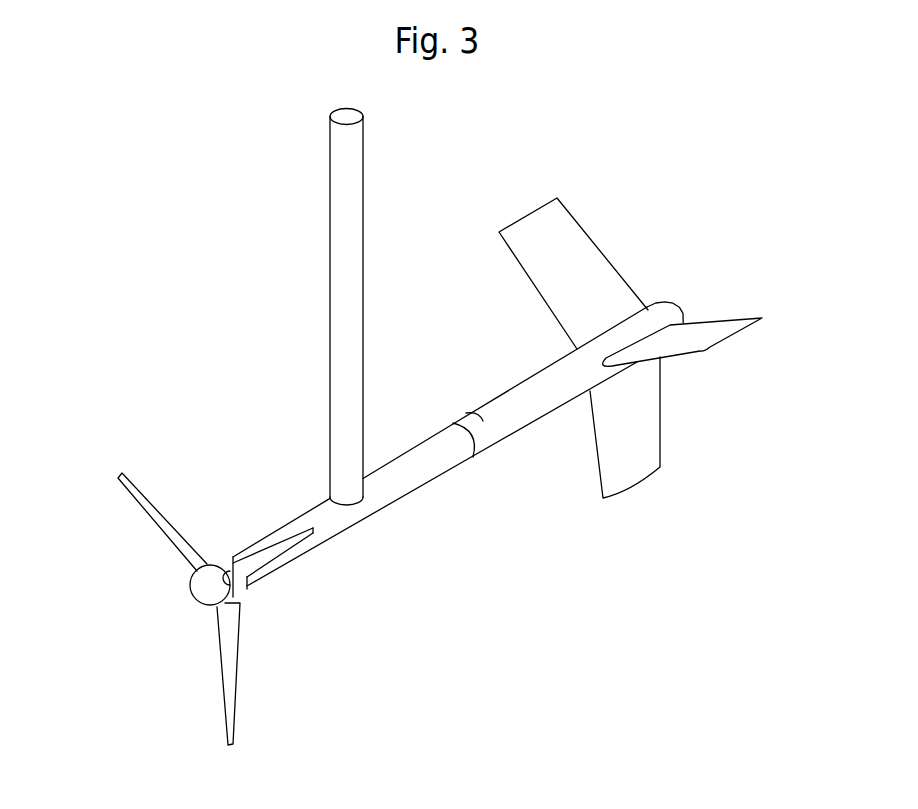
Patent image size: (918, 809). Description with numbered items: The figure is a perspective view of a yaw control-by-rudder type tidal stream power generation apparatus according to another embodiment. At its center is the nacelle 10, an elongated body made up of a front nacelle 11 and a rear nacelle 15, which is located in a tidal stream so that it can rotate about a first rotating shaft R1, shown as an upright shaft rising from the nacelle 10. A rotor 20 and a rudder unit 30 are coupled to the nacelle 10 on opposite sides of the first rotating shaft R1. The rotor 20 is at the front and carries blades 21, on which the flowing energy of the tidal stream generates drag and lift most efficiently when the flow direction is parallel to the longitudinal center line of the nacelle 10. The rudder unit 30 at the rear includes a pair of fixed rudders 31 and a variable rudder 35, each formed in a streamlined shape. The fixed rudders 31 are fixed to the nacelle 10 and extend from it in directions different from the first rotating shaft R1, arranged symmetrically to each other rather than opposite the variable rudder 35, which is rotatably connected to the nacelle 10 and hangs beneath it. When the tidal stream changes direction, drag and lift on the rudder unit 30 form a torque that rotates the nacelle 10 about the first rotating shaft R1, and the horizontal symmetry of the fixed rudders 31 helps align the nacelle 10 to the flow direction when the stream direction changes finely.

The nacelle 10 is at (458, 434).
The front nacelle 11 is at (423, 452).
The rear nacelle 15 is at (468, 410).
The rotor 20 is at (142, 567).
The blades 21 is at (160, 517).
The rudder unit 30 is at (667, 338).
The fixed rudder 31 is at (703, 327).
The variable rudder 35 is at (655, 452).
The first rotating shaft R1 is at (342, 212).